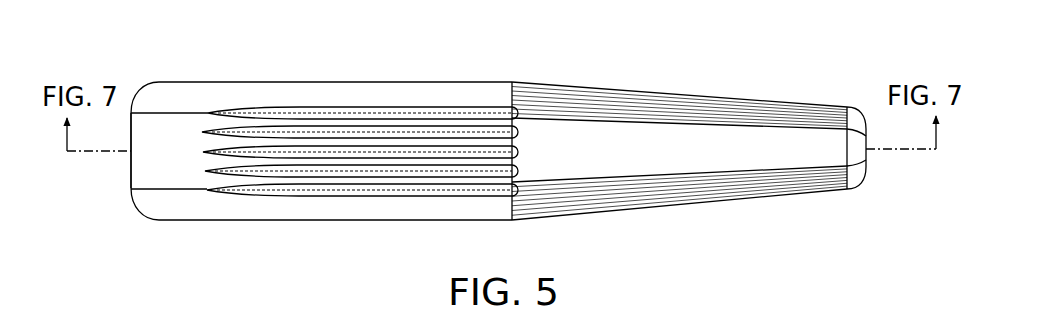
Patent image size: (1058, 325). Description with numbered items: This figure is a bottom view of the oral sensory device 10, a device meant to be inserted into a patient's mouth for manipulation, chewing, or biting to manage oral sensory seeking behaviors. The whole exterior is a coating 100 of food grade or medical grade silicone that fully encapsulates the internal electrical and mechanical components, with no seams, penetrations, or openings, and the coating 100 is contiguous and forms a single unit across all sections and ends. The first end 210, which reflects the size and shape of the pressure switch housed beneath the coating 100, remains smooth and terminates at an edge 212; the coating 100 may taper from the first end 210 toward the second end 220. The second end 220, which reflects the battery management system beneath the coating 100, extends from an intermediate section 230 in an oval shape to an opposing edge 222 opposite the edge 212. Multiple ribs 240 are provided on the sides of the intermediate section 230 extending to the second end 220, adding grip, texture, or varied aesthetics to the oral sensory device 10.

The oral sensory device 10 is at (136, 31).
The coating 100 is at (187, 201).
The first end 210 is at (772, 97).
The edge 212 is at (870, 177).
The second end 220 is at (278, 98).
The opposing edge 222 is at (127, 182).
The intermediate section 230 is at (472, 94).
The ribs 240 is at (347, 112).